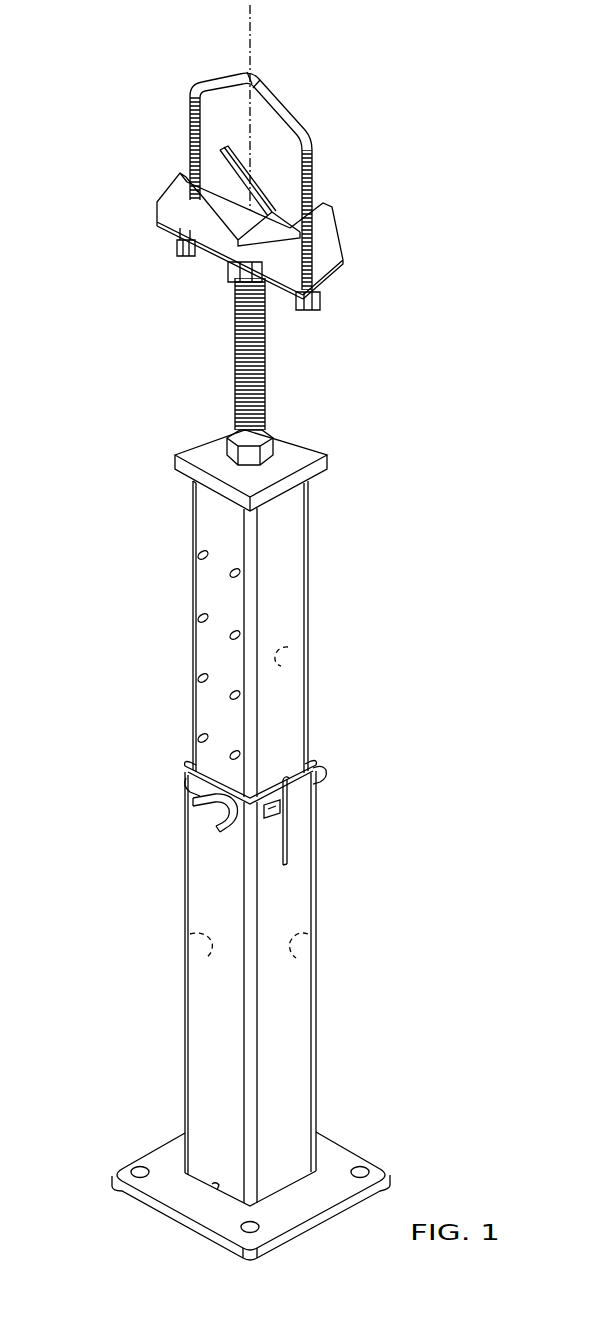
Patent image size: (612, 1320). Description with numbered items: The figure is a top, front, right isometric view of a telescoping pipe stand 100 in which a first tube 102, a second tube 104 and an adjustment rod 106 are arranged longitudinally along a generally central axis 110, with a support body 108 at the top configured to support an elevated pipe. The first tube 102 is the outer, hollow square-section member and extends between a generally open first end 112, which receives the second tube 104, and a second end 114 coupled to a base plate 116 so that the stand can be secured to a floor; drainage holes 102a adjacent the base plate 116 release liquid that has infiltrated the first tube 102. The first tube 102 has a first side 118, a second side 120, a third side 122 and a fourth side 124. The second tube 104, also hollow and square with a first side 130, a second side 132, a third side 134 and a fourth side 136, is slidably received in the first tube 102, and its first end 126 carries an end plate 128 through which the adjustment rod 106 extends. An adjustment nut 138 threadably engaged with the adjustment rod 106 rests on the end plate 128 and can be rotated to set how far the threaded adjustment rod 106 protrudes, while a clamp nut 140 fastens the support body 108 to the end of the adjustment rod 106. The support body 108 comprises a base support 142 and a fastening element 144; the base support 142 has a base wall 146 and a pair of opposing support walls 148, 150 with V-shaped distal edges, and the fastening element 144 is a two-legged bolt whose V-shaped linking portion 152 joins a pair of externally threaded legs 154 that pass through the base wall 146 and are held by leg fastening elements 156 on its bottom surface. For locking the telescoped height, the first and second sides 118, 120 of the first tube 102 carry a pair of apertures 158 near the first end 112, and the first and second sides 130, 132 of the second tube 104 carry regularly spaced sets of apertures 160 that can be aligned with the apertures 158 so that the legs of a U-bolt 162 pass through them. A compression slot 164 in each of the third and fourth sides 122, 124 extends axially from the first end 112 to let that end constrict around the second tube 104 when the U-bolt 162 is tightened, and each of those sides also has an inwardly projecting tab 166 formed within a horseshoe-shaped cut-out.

The telescoping pipe stand 100 is at (438, 40).
The first tube 102 is at (255, 969).
The drainage holes 102a is at (215, 1187).
The second tube 104 is at (257, 639).
The adjustment rod 106 is at (240, 346).
The support body 108 is at (265, 189).
The central axis 110 is at (251, 38).
The first end of first tube 112 is at (327, 762).
The second end of first tube 114 is at (238, 1196).
The base plate 116 is at (300, 1207).
The first side of first tube 118 is at (200, 1000).
The second side of first tube 120 is at (310, 936).
The third side of first tube 122 is at (302, 1000).
The fourth side of first tube 124 is at (190, 936).
The first end of second tube 126 is at (320, 481).
The end plate 128 is at (267, 467).
The first side of second tube 130 is at (206, 528).
The second side of second tube 132 is at (304, 650).
The third side of second tube 134 is at (292, 706).
The fourth side of second tube 136 is at (205, 502).
The adjustment nut 138 is at (272, 446).
The clamp nut 140 is at (232, 272).
The base support 142 is at (352, 256).
The fastening element 144 is at (262, 167).
The base wall 146 is at (332, 272).
The support wall 148 is at (217, 178).
The support wall 150 is at (260, 240).
The V-shaped linking portion 152 is at (244, 74).
The legs 154 is at (193, 122).
The leg fastening elements 156 is at (177, 243).
The apertures 158 is at (198, 794).
The apertures 160 is at (230, 573).
The U-bolt 162 is at (198, 818).
The compression slot 164 is at (290, 834).
The inwardly projecting tab 166 is at (282, 806).